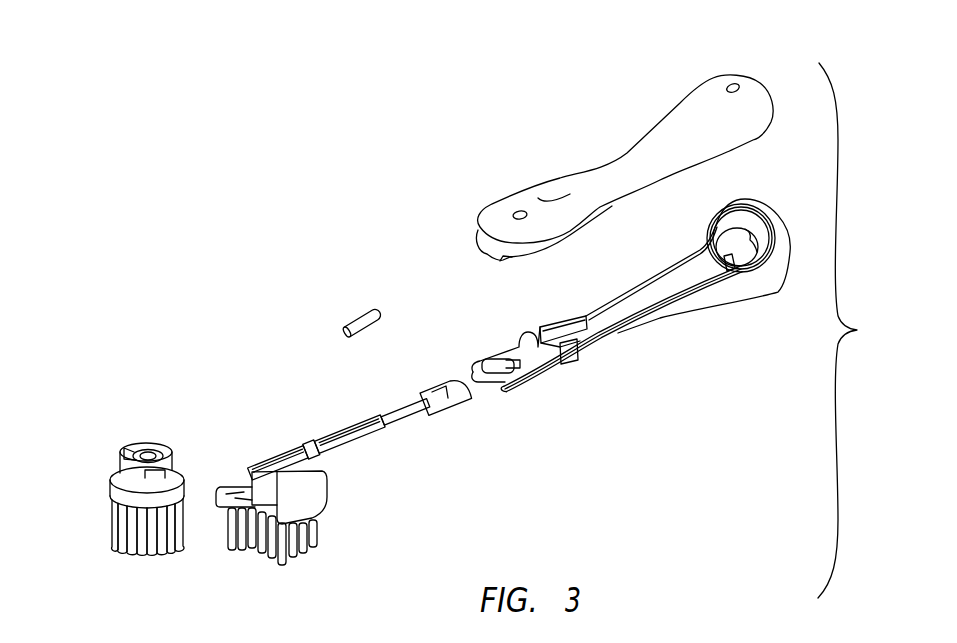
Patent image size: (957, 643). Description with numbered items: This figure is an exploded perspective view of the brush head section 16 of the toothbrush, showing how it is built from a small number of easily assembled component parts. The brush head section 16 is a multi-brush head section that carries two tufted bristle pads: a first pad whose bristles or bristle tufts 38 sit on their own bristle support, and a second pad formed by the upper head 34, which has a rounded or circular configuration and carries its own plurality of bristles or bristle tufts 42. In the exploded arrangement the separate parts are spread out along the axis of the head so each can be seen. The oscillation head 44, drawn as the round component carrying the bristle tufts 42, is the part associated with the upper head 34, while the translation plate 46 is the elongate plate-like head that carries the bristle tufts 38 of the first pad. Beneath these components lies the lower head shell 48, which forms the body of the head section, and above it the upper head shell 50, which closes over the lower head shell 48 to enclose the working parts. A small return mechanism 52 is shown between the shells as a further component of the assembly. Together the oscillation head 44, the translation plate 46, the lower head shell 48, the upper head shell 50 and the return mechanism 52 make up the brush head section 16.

The brush head section 16 is at (851, 330).
The upper head 34 is at (113, 498).
The bristle tufts 38 is at (311, 550).
The bristle tufts 42 is at (127, 550).
The oscillation head 44 is at (100, 463).
The translation plate 46 is at (343, 456).
The lower head shell 48 is at (613, 340).
The upper head shell 50 is at (622, 151).
The return mechanism 52 is at (356, 323).